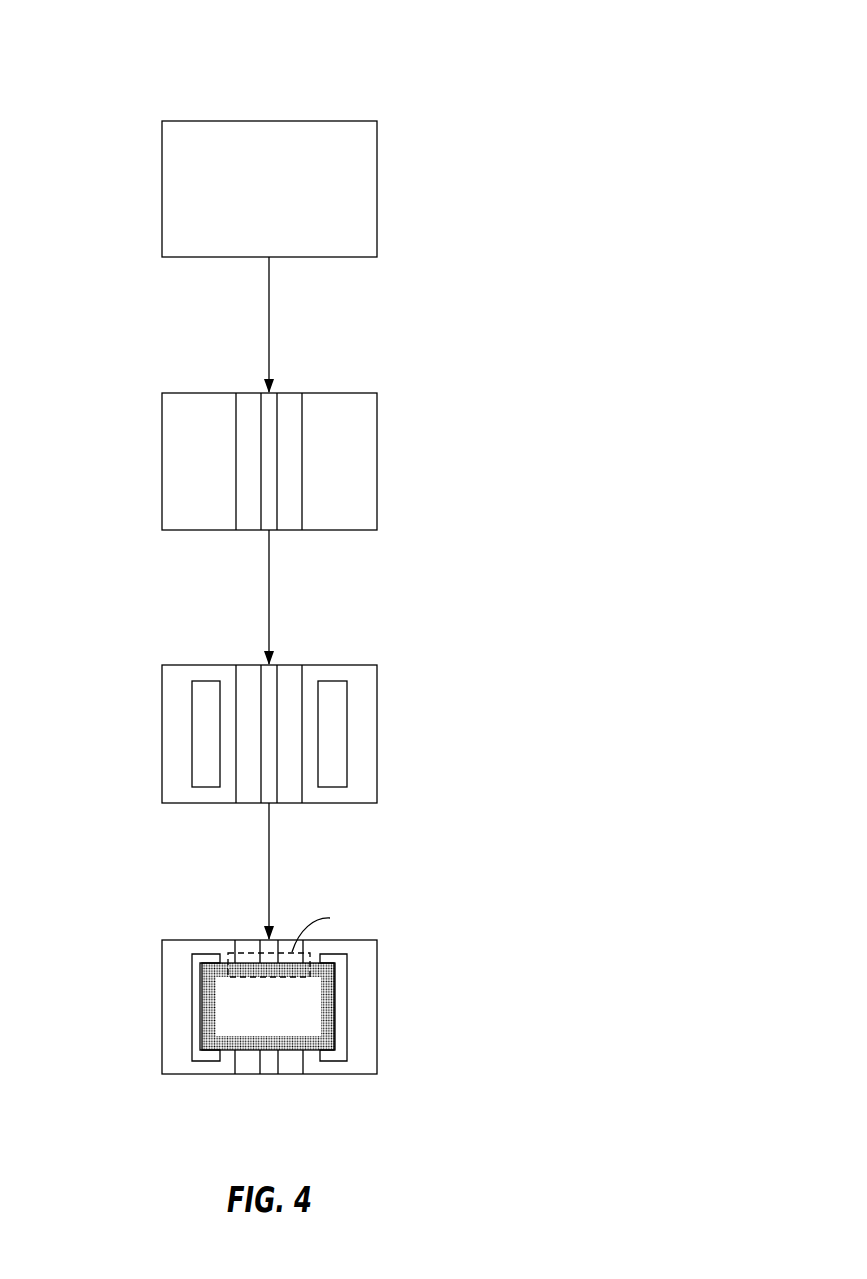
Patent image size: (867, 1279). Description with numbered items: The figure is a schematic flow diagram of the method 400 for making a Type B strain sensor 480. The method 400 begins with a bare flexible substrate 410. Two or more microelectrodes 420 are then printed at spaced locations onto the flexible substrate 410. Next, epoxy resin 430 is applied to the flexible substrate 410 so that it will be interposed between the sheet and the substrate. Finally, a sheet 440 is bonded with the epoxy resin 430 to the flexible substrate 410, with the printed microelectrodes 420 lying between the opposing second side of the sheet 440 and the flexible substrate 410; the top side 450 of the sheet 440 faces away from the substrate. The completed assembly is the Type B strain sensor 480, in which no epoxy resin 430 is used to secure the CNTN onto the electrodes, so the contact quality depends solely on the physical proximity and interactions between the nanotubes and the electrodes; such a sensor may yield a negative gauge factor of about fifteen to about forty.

The method for making a Type B strain sensor 400 is at (416, 54).
The flexible substrate 410 is at (186, 120).
The microelectrodes 420 is at (303, 450).
The epoxy resin 430 is at (193, 735).
The sheet 440 is at (315, 1005).
The top side 450 is at (289, 1023).
The Type B strain sensor 480 is at (409, 916).